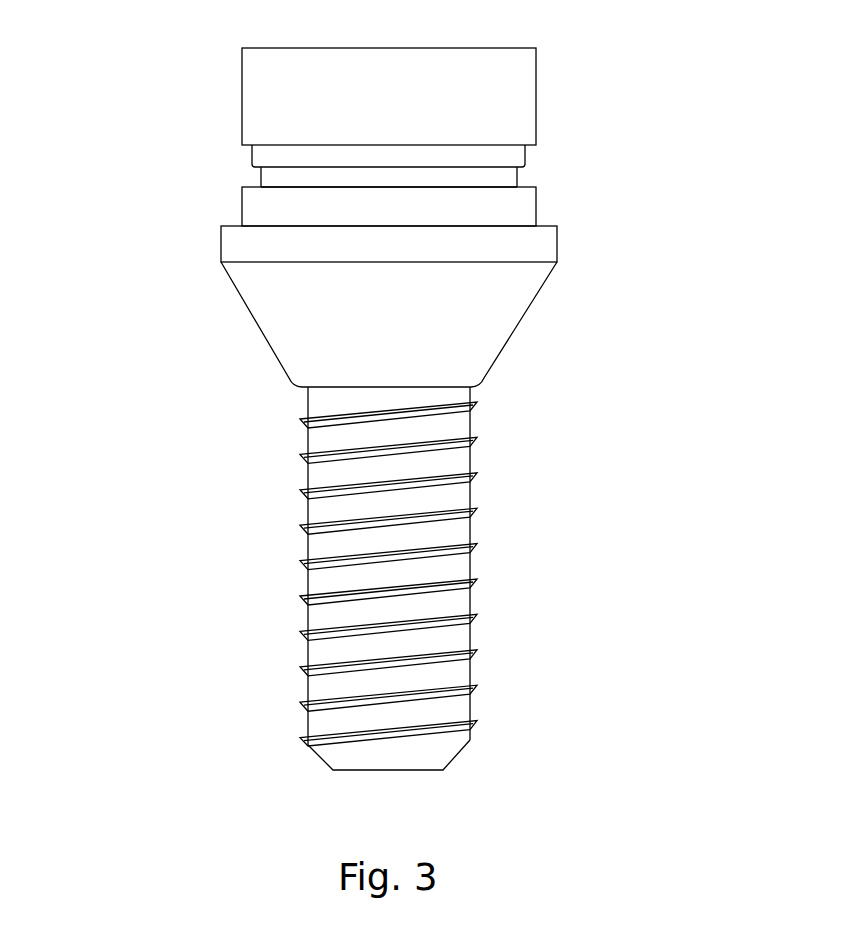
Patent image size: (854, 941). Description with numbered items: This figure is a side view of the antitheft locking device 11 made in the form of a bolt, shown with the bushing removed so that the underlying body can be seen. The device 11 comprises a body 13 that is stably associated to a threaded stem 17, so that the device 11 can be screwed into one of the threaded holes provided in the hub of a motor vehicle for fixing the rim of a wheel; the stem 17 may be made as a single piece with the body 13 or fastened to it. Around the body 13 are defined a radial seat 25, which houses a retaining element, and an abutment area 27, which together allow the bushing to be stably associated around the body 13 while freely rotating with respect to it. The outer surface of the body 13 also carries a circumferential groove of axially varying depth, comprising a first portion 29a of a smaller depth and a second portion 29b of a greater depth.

The antitheft locking device 11 is at (388, 409).
The body 13 is at (411, 337).
The threaded stem 17 is at (470, 561).
The radial seat 25 is at (528, 178).
The abutment area 27 is at (545, 228).
The first portion of circumferential groove 29a is at (527, 157).
The second portion of circumferential groove 29b is at (260, 175).